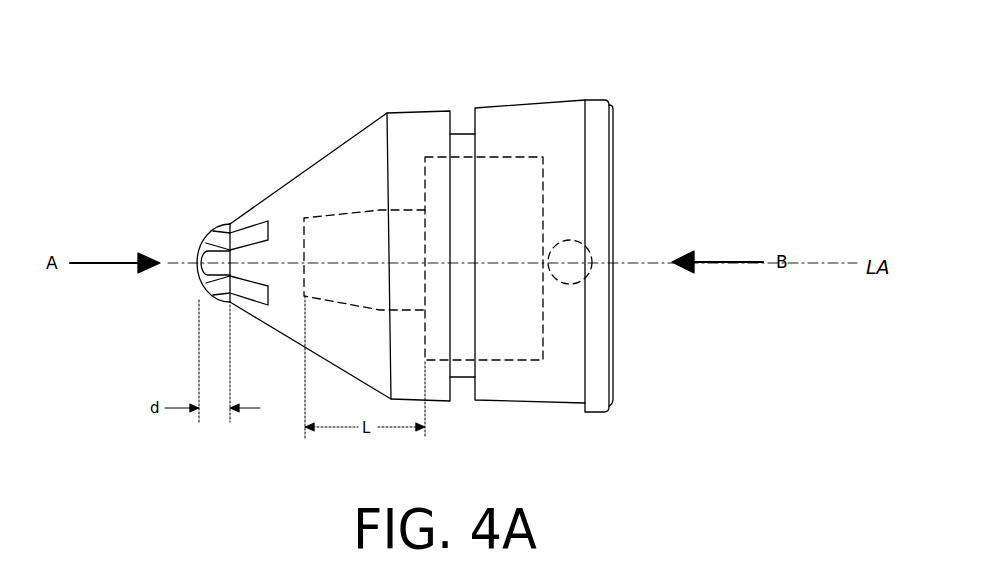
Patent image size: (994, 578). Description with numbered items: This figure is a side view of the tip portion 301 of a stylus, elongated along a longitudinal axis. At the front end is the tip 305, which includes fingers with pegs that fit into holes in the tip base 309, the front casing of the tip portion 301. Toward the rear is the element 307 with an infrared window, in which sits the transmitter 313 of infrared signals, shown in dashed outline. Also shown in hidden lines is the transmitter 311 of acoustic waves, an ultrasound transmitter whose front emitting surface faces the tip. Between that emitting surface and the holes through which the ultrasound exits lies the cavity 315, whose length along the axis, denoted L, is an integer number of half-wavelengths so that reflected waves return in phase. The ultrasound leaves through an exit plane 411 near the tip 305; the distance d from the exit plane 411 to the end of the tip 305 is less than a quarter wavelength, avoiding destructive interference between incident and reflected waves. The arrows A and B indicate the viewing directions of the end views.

The tip portion 301 is at (420, 290).
The tip 305 is at (200, 262).
The element with infrared window 307 is at (535, 127).
The tip base 309 is at (313, 183).
The transmitter of acoustic waves 311 is at (500, 335).
The transmitter of infrared signals 313 is at (556, 281).
The cavity 315 is at (365, 228).
The exit plane 411 is at (220, 225).